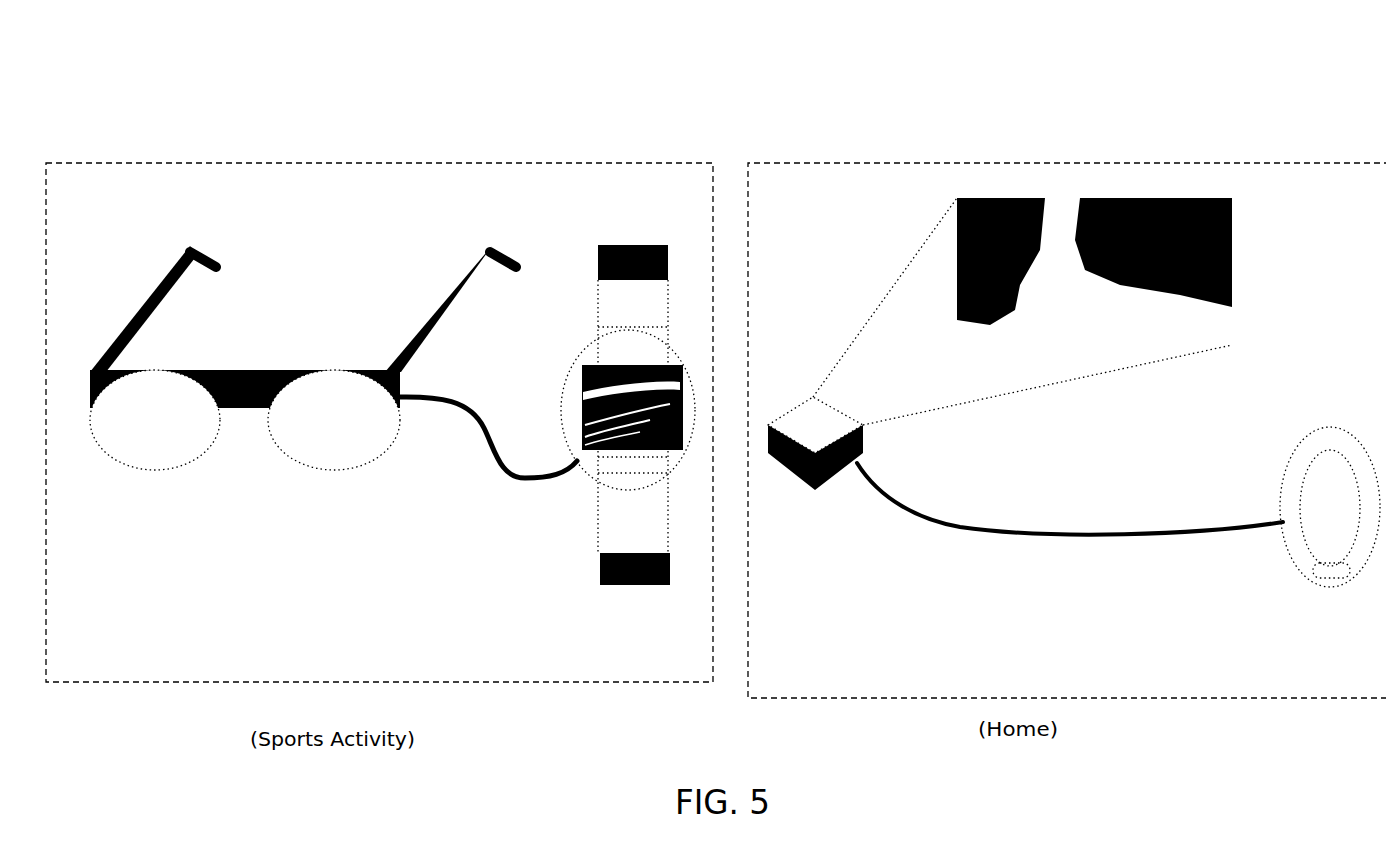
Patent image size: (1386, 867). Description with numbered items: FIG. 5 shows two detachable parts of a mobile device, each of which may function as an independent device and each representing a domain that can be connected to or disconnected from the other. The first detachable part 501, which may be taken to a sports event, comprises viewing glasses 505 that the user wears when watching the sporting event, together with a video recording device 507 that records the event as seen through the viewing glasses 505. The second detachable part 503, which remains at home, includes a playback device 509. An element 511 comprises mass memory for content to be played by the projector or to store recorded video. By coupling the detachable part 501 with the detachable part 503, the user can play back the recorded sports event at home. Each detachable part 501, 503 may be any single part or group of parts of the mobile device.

The detachable part 501 is at (181, 157).
The detachable part 503 is at (848, 158).
The viewing glasses 505 is at (113, 455).
The video recording device 507 is at (600, 567).
The playback device 509 is at (783, 475).
The mass memory element 511 is at (1302, 573).